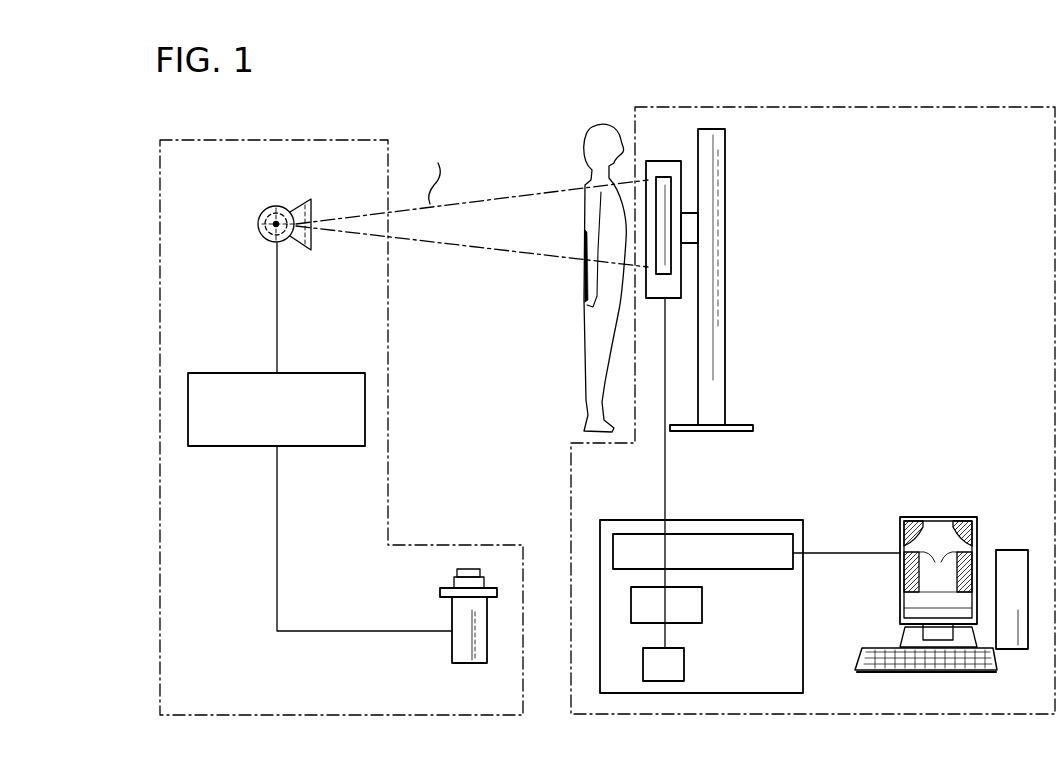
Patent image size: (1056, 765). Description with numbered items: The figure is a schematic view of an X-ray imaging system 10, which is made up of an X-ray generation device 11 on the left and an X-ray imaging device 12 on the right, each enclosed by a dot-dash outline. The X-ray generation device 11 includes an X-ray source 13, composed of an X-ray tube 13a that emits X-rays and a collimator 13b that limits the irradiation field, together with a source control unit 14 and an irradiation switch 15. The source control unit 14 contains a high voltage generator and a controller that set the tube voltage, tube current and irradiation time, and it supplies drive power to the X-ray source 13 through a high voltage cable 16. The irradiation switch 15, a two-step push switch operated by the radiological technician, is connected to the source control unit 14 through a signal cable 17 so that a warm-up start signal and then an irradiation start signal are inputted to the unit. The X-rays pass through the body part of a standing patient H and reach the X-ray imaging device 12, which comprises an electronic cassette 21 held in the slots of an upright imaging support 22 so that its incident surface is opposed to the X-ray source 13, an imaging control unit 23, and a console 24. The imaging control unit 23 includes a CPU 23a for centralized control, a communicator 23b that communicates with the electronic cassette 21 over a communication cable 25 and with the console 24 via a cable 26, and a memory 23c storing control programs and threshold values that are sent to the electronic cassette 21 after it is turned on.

The X-ray imaging system 10 is at (489, 104).
The X-ray generation device 11 is at (367, 140).
The X-ray imaging device 12 is at (761, 107).
The X-ray source 13 is at (273, 208).
The X-ray tube 13a is at (258, 224).
The collimator 13b is at (314, 205).
The source control unit 14 is at (248, 372).
The irradiation switch 15 is at (452, 650).
The high voltage cable 16 is at (277, 302).
The signal cable 17 is at (277, 503).
The electronic cassette 21 is at (666, 177).
The imaging support 22 is at (725, 189).
The imaging control unit 23 is at (718, 520).
The CPU 23a is at (698, 623).
The communicator 23b is at (645, 534).
The memory 23c is at (678, 677).
The console 24 is at (972, 518).
The communication cable 25 is at (665, 462).
The cable 26 is at (857, 553).
The patient H is at (590, 340).